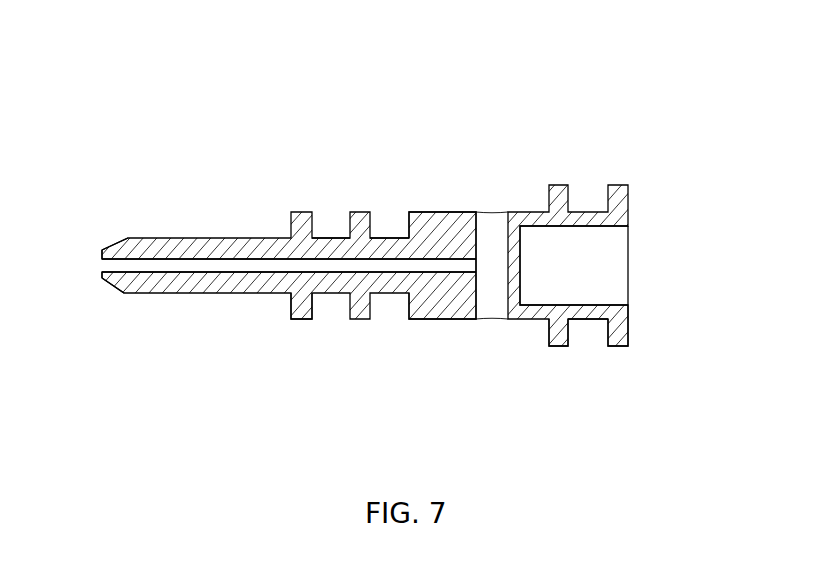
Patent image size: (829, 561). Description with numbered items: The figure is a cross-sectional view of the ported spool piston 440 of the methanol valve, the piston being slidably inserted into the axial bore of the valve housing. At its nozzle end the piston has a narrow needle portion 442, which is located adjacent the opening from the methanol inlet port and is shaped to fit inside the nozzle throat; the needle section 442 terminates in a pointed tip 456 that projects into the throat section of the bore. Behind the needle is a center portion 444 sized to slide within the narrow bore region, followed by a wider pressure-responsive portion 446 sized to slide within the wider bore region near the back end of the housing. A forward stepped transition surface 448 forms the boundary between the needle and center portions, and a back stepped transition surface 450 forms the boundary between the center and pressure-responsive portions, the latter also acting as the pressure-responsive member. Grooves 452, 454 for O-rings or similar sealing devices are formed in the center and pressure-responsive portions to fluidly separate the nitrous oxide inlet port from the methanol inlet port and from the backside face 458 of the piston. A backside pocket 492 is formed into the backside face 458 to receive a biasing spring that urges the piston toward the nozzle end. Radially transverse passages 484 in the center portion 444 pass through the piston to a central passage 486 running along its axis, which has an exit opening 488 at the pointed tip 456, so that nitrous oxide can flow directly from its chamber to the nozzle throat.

The ported spool piston 440 is at (592, 99).
The narrow needle portion 442 is at (232, 237).
The center portion 444 is at (440, 212).
The pressure-responsive portion 446 is at (559, 185).
The forward stepped transition surface 448 is at (291, 300).
The back stepped transition surface 450 is at (548, 335).
The forward O-ring grooves 452 is at (382, 238).
The O-ring groove 454 is at (586, 320).
The pointed tip 456 is at (126, 293).
The backside face 458 is at (629, 326).
The radially transverse passages 484 is at (494, 253).
The central passage 486 is at (325, 263).
The exit opening 488 is at (103, 265).
The backside pocket 492 is at (586, 227).